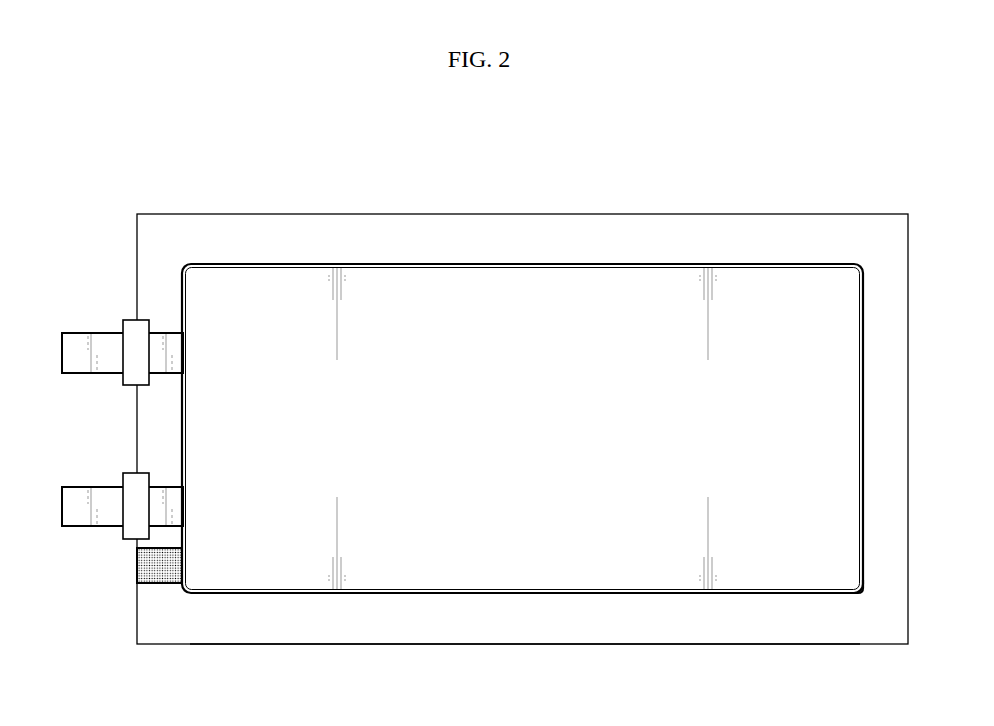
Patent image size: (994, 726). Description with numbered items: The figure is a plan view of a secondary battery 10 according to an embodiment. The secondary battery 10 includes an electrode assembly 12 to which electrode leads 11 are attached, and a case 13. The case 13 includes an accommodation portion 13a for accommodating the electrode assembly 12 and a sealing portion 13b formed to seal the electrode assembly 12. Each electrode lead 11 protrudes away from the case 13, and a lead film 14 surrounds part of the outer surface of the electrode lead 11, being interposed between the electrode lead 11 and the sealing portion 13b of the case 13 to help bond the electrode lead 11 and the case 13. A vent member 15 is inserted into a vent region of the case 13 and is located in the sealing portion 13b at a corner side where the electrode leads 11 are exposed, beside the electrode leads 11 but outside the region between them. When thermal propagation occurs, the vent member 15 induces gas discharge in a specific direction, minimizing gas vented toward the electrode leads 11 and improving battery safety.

The secondary battery 10 is at (197, 134).
The electrode lead 11 is at (79, 368).
The electrode assembly 12 is at (512, 283).
The case 13 is at (699, 203).
The accommodation portion 13a is at (796, 596).
The sealing portion 13b is at (683, 617).
The lead film 14 is at (130, 322).
The vent member 15 is at (158, 574).